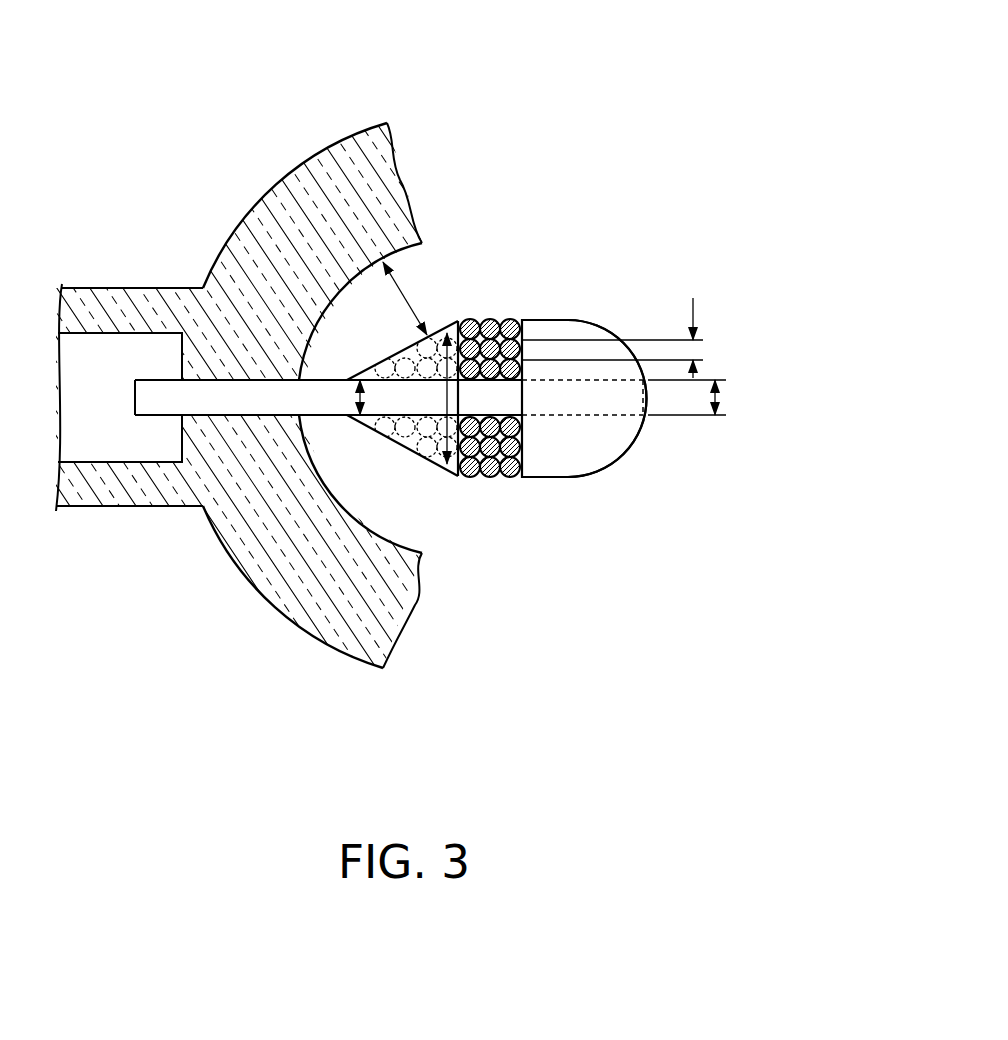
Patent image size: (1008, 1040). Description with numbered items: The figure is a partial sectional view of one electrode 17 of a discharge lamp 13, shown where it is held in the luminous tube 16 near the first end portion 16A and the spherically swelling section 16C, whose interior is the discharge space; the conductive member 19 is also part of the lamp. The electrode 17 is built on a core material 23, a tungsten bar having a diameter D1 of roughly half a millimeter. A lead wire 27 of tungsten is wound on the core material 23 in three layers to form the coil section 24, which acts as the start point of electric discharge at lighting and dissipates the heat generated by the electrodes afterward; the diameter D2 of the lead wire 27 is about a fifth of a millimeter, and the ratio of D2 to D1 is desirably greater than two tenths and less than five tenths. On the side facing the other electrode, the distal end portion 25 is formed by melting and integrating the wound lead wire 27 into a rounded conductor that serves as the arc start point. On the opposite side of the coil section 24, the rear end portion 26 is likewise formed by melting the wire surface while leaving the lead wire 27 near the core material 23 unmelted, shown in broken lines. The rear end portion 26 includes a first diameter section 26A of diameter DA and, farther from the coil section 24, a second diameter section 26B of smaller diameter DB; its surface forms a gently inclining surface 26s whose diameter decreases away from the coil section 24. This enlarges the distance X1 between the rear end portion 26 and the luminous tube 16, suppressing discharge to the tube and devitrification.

The discharge lamp 13 is at (490, 143).
The luminous tube 16 is at (360, 417).
The first end portion 16A is at (153, 497).
The swelling section 16C is at (255, 563).
The electrode 17 is at (640, 379).
The conductive member 19 is at (87, 450).
The core material 23 is at (236, 387).
The coil section 24 is at (500, 308).
The distal end portion 25 is at (598, 480).
The rear end portion 26 is at (439, 393).
The first diameter section 26A is at (453, 320).
The second diameter section 26B is at (365, 353).
The inclining surface 26s is at (320, 317).
The lead wire 27 is at (383, 433).
The first diameter DA is at (447, 400).
The second diameter DB is at (360, 400).
The diameter of the core material D1 is at (703, 399).
The diameter of the lead wire D2 is at (626, 335).
The distance between the rear end portion and the luminous tube X1 is at (414, 298).